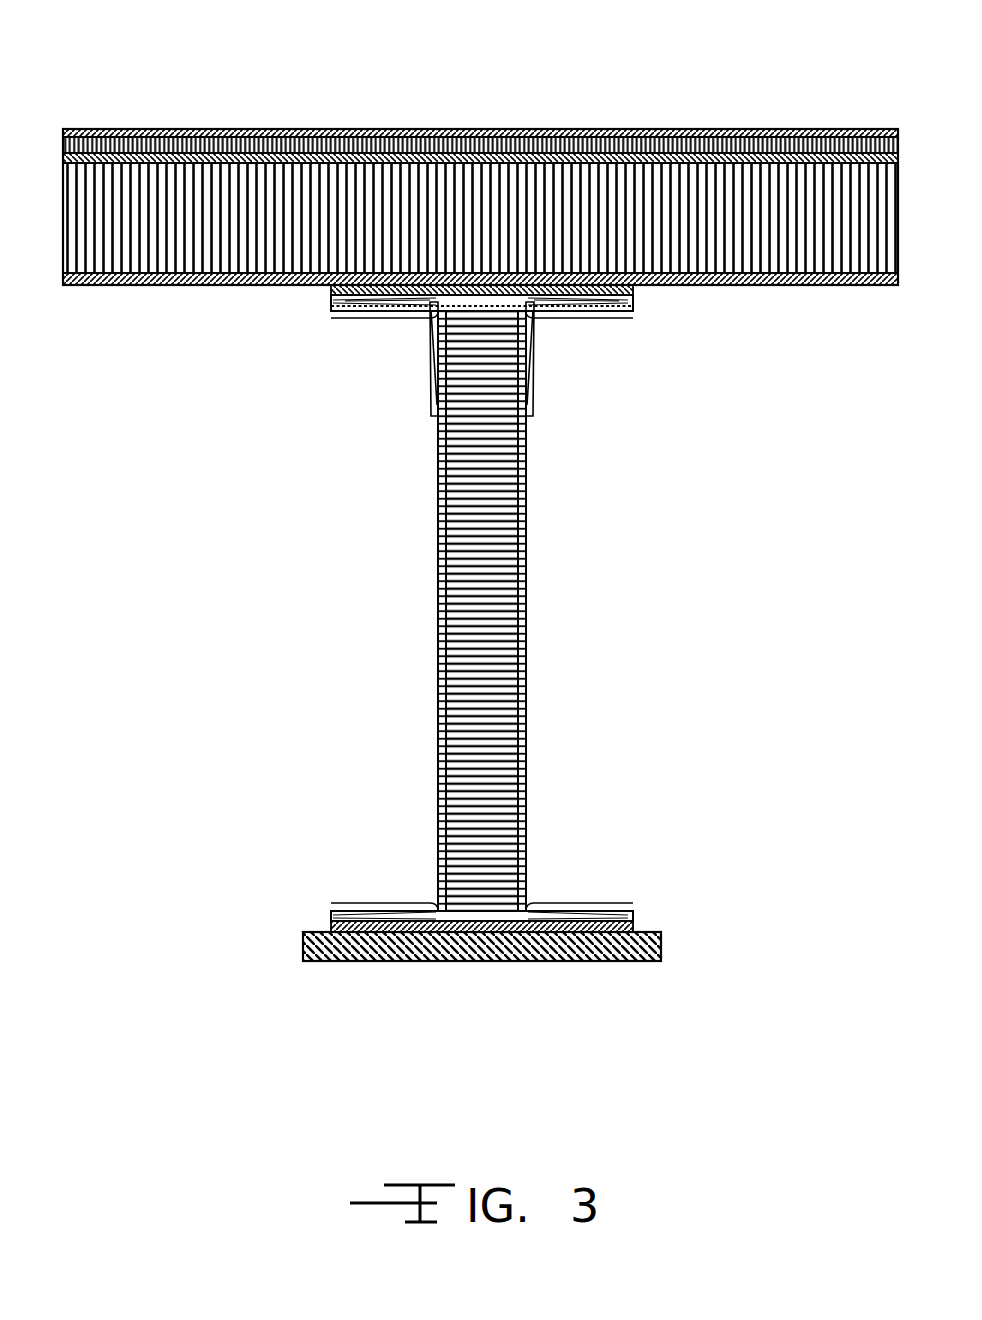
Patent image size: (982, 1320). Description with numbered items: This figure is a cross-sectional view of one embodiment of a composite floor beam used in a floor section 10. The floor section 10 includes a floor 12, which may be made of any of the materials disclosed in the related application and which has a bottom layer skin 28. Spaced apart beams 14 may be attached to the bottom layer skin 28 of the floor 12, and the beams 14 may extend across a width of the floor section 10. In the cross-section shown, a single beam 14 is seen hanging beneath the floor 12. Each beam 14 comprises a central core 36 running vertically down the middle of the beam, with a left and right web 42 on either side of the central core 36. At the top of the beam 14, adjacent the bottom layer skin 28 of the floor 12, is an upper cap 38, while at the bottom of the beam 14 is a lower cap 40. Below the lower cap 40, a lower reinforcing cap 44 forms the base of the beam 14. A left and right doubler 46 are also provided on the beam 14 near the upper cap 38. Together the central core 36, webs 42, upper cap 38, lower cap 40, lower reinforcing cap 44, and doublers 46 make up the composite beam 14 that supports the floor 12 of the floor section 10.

The floor section 10 is at (836, 84).
The floor 12 is at (98, 224).
The beam 14 is at (433, 693).
The bottom layer skin 28 is at (178, 292).
The central core 36 is at (497, 750).
The upper cap 38 is at (643, 291).
The lower cap 40 is at (645, 926).
The web 42 is at (532, 455).
The lower reinforcing cap 44 is at (647, 970).
The doubler 46 is at (540, 398).